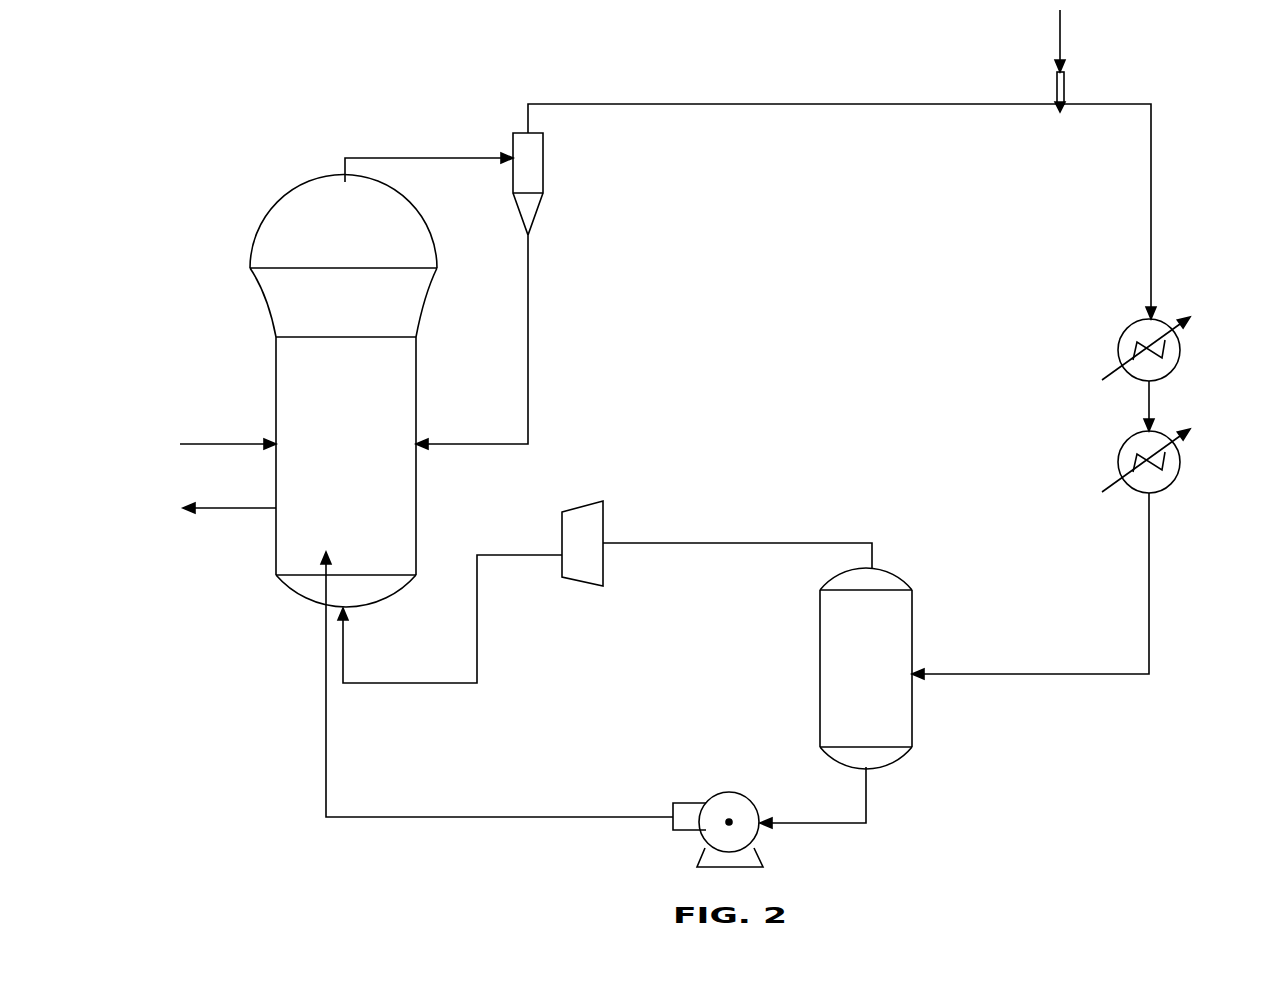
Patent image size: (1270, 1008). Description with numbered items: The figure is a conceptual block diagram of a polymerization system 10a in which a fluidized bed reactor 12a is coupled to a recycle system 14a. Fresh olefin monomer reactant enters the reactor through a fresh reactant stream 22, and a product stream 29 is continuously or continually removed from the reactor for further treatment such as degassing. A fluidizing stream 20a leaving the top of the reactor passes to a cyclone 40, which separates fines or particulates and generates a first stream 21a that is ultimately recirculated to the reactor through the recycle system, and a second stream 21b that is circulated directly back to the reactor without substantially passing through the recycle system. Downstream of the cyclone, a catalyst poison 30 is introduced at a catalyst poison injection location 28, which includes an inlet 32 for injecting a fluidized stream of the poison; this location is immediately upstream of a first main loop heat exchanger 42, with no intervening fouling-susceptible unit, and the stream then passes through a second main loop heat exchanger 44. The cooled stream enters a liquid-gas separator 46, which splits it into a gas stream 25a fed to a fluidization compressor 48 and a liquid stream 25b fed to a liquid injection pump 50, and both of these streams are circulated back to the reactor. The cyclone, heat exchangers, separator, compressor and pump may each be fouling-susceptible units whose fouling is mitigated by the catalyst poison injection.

The polymerization system 10a is at (180, 158).
The fluidized bed reactor 12a is at (277, 365).
The recycle system 14a is at (670, 103).
The fluidizing stream 20a is at (427, 157).
The first stream 21a is at (540, 100).
The second stream 21b is at (528, 300).
The fresh reactant stream 22 is at (226, 443).
The gas stream 25a is at (707, 543).
The liquid stream 25b is at (828, 822).
The catalyst poison injection location 28 is at (1064, 112).
The product stream 29 is at (222, 510).
The catalyst poison 30 is at (1062, 32).
The inlet 32 is at (1064, 92).
The cyclone 40 is at (543, 170).
The first main loop heat exchanger 42 is at (1178, 358).
The second main loop heat exchanger 44 is at (1168, 487).
The liquid-gas separator 46 is at (915, 745).
The fluidization compressor 48 is at (590, 584).
The liquid injection pump 50 is at (752, 838).